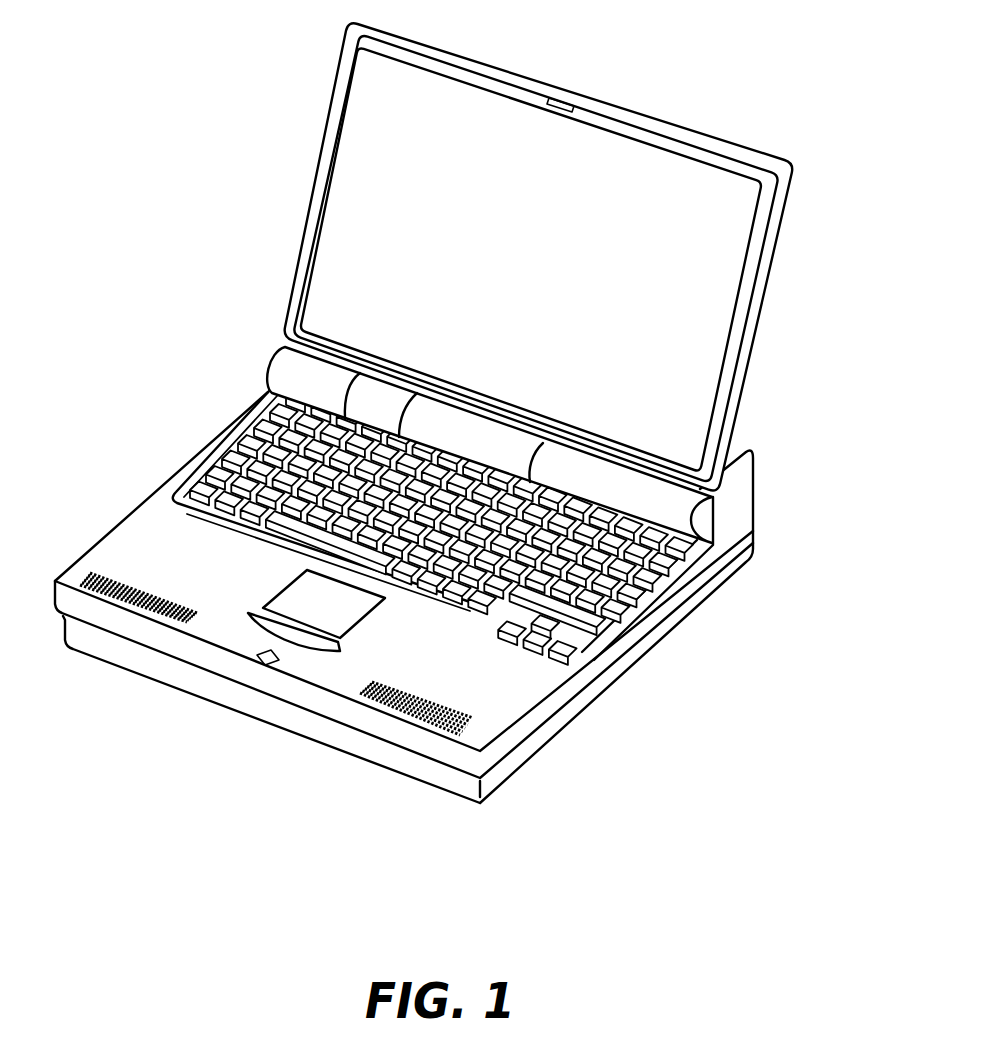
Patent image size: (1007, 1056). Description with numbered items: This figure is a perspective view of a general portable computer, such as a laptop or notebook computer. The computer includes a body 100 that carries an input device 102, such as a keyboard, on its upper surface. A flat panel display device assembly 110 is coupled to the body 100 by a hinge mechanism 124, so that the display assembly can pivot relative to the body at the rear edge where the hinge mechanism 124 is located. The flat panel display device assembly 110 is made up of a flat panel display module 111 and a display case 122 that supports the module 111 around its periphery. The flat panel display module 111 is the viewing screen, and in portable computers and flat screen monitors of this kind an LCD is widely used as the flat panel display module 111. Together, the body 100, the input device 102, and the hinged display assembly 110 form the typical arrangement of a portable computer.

The body 100 is at (587, 721).
The input device 102 is at (643, 575).
The flat panel display device assembly 110 is at (560, 256).
The flat panel display module 111 is at (353, 197).
The display case 122 is at (760, 327).
The hinge mechanism 124 is at (360, 397).